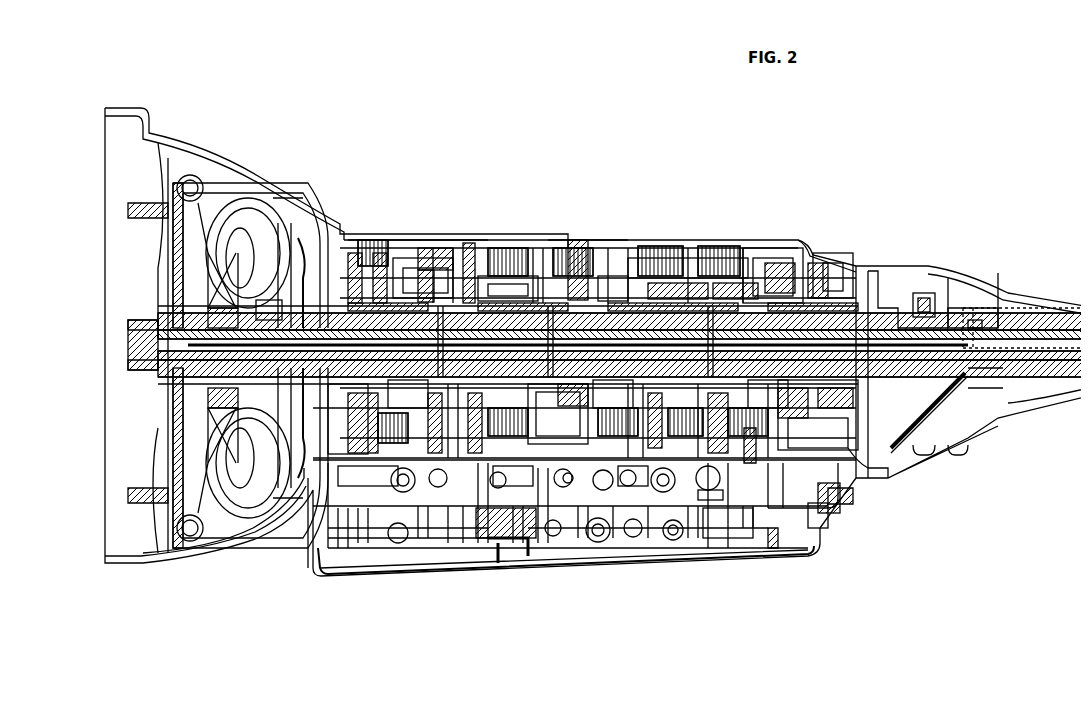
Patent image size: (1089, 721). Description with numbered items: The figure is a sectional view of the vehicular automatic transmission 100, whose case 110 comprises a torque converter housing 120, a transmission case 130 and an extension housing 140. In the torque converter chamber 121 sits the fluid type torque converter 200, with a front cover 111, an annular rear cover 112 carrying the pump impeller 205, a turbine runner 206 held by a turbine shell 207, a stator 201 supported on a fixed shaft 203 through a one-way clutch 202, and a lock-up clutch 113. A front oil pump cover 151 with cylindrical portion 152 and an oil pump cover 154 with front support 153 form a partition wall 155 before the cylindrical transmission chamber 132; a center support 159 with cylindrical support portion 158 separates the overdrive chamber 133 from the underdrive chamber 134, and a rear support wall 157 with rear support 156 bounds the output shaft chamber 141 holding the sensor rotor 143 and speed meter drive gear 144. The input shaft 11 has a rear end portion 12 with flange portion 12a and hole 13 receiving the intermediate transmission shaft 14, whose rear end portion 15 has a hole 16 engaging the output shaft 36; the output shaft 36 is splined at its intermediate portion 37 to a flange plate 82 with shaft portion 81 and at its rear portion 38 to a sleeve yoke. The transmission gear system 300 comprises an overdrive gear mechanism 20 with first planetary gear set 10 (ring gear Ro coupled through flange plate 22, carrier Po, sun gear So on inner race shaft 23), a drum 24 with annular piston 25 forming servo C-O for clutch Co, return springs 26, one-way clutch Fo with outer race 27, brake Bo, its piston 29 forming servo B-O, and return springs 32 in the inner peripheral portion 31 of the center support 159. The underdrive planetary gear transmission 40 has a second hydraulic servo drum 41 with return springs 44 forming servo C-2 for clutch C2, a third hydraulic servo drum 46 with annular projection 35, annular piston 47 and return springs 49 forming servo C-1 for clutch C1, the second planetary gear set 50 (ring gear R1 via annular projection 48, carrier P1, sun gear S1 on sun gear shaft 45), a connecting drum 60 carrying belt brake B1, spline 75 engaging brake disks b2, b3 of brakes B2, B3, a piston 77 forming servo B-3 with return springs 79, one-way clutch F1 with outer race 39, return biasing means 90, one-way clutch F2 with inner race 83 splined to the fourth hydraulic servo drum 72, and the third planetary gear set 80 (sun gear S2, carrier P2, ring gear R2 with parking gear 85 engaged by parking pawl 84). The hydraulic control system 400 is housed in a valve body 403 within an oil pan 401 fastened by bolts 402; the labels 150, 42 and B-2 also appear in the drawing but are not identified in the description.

The automatic transmission 100 is at (172, 122).
The torque converter 200 is at (195, 168).
The pump impeller 150 is at (250, 170).
The turbine runner 154 is at (270, 186).
The stator 153 is at (290, 215).
The overdrive clutch C-O is at (310, 235).
The overdrive planetary gear carrier 23 is at (325, 200).
The pinion gear 24 is at (336, 205).
The oil pump 300 is at (342, 210).
The input shaft 10 is at (347, 212).
The overdrive brake Bo is at (350, 230).
The ring gear 25 is at (360, 235).
The sun gear 27 is at (366, 238).
The sun gear So is at (376, 240).
The pinion gear Po is at (386, 245).
The ring gear Ro is at (399, 250).
The overdrive planetary gear unit 22 is at (414, 226).
The one-way clutch 29 is at (432, 225).
The overdrive brake B-O is at (442, 225).
The second clutch C-2 is at (447, 225).
The clutch drum 41 is at (452, 225).
The clutch hub 42 is at (462, 225).
The second clutch C2 is at (468, 225).
The clutch piston 44 is at (480, 225).
The first brake B1 is at (490, 225).
The first clutch C-1 is at (502, 230).
The clutch drum 46 is at (517, 230).
The clutch hub 47 is at (532, 226).
The first clutch C1 is at (542, 225).
The intermediate shaft 49 is at (556, 225).
The pinion gear P1 is at (562, 230).
The ring gear R1 is at (590, 240).
The sun gear S1 is at (602, 235).
The planetary gear unit 60 is at (616, 230).
The second brake B2 is at (634, 248).
The brake piston 75 is at (641, 236).
The brake band b2 is at (651, 246).
The one-way clutch 39 is at (662, 250).
The clutch drum 45 is at (672, 245).
The second brake B-2 is at (702, 240).
The third brake B3 is at (706, 245).
The carrier 72 is at (722, 240).
The brake band b3 is at (741, 245).
The brake piston 83 is at (757, 248).
The pinion gear P2 is at (766, 250).
The sun gear S2 is at (771, 250).
The ring gear R2 is at (777, 250).
The rear planetary gear unit 130 is at (786, 250).
The one-way clutch 82 is at (792, 258).
The brake hub 81 is at (812, 260).
The third brake B-3 is at (821, 262).
The brake drum 77 is at (832, 265).
The output flange 157 is at (850, 270).
The bearing 156 is at (872, 265).
The extension housing 143 is at (906, 262).
The output shaft 140 is at (952, 285).
The speed sensor 144 is at (968, 305).
The converter cover 151 is at (162, 212).
The lock-up clutch 152 is at (167, 242).
The front cover 11 is at (150, 330).
The converter axis 203 is at (210, 328).
The converter hub 202 is at (190, 346).
The stator shaft 201 is at (188, 376).
The one-way clutch 155 is at (178, 412).
The housing flange 111 is at (168, 442).
The housing wall 121 is at (120, 520).
The bolt 113 is at (110, 562).
The transmission case 110 is at (150, 555).
The seal 207 is at (200, 520).
The bearing 206 is at (210, 520).
The housing wall 112 is at (215, 515).
The converter housing 120 is at (220, 540).
The pump drive hub 205 is at (245, 525).
The partition wall 133 is at (300, 500).
The one-way clutch Fo is at (305, 476).
The clutch Co is at (312, 456).
The oil passage 132 is at (336, 505).
The shaft portion 12a is at (346, 462).
The valve body 32 is at (362, 462).
The valve 31 is at (402, 505).
The oil strainer 159 is at (421, 500).
The hydraulic control unit 400 is at (472, 480).
The oil pan 158 is at (496, 542).
The solenoid valve 35 is at (502, 540).
The oil passage 15 is at (508, 538).
The oil passage 16 is at (522, 532).
The clutch drum 48 is at (532, 468).
The valve 36 is at (542, 482).
The one-way clutch F1 is at (562, 472).
The center support 134 is at (592, 478).
The output gear 90 is at (627, 482).
The one-way clutch F2 is at (637, 482).
The oil pipe 403 is at (667, 478).
The valve body 401 is at (691, 556).
The brake piston 84 is at (722, 532).
The spring 85 is at (752, 542).
The rear support 40 is at (822, 506).
The bracket 402 is at (832, 512).
The parking gear 79 is at (840, 462).
The governor 37 is at (876, 446).
The extension housing rib 141 is at (936, 425).
The output shaft 38 is at (1032, 386).
The overdrive clutch hub 26 is at (262, 300).
The overdrive unit 20 is at (412, 392).
The front planetary unit 50 is at (614, 392).
The rear planetary unit 80 is at (768, 392).
The pump body 12 is at (250, 428).
The pump cover 13 is at (260, 462).
The bearing 14 is at (372, 425).